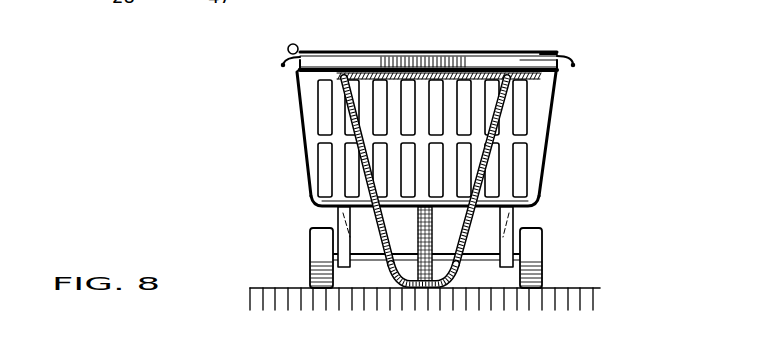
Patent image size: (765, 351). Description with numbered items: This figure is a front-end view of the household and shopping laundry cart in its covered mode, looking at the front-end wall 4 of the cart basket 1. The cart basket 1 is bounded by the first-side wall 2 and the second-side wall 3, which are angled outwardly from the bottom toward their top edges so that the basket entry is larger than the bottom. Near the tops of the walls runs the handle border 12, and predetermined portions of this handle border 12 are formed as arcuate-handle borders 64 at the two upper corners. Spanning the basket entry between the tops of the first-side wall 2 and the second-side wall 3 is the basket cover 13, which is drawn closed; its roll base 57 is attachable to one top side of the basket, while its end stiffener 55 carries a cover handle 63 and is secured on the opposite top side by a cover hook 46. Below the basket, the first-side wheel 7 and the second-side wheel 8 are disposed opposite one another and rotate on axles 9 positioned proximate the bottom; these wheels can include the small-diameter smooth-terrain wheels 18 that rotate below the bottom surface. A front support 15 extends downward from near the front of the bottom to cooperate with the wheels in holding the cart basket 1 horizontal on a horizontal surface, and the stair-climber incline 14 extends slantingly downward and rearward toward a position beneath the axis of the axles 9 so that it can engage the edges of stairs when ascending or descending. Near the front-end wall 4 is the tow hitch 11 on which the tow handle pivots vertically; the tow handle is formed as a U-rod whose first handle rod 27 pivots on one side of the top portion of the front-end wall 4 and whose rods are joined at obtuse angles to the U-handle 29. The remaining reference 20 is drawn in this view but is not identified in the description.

The cart basket 1 is at (640, 160).
The first-side wall 2 is at (548, 127).
The second-side wall 3 is at (300, 131).
The front-end wall 4 is at (430, 140).
The first-side wheel 7 is at (527, 250).
The second-side wheel 8 is at (317, 247).
The axles 9 is at (483, 263).
The tow hitch 11 is at (445, 80).
The handle border 12 is at (448, 50).
The basket cover 13 is at (387, 50).
The stair-climber incline 14 is at (352, 240).
The front support 15 is at (393, 277).
The smooth-terrain wheels 18 is at (557, 255).
The central post 20 is at (440, 284).
The first handle rod 27 is at (487, 175).
The U-handle 29 is at (363, 175).
The cover hook 46 is at (567, 52).
The end stiffener 55 is at (537, 50).
The roll base 57 is at (290, 43).
The cover handle 63 is at (550, 50).
The arcuate-handle borders 64 is at (283, 57).